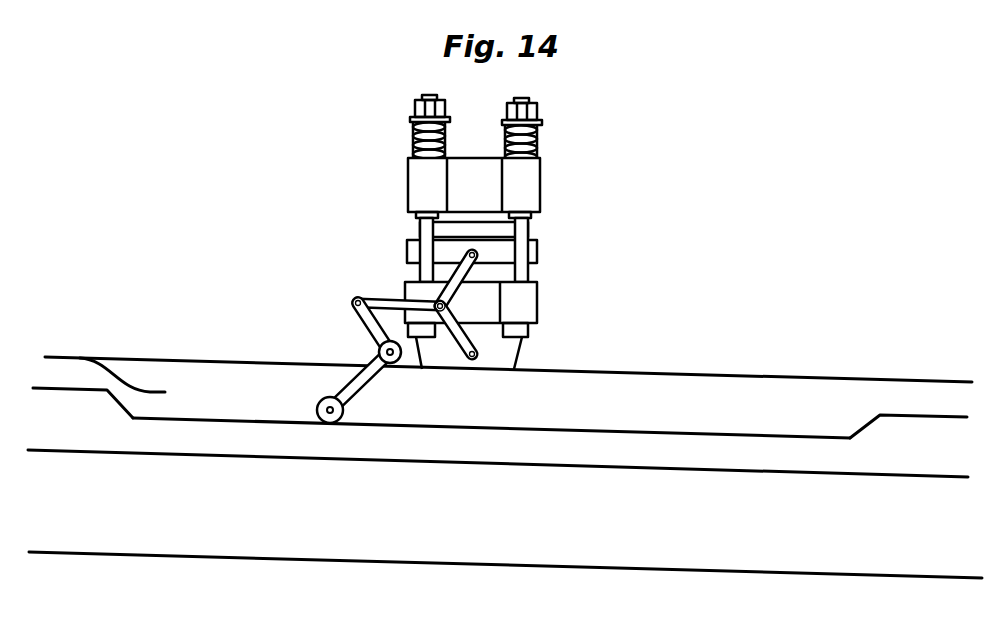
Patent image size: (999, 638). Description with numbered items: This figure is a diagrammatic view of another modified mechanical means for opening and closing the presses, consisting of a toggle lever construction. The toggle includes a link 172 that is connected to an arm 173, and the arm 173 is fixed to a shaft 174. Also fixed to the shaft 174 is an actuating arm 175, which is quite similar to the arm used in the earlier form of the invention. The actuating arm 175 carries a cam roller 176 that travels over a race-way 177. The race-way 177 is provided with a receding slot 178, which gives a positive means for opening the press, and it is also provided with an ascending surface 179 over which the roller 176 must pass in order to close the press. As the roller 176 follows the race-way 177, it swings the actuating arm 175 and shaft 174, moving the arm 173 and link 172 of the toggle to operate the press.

The link 172 is at (392, 298).
The arm 173 is at (357, 323).
The shaft 174 is at (378, 348).
The actuating arm 175 is at (358, 377).
The cam roller 176 is at (319, 401).
The race-way 177 is at (418, 436).
The receding slot 178 is at (125, 380).
The ascending surface 179 is at (863, 430).